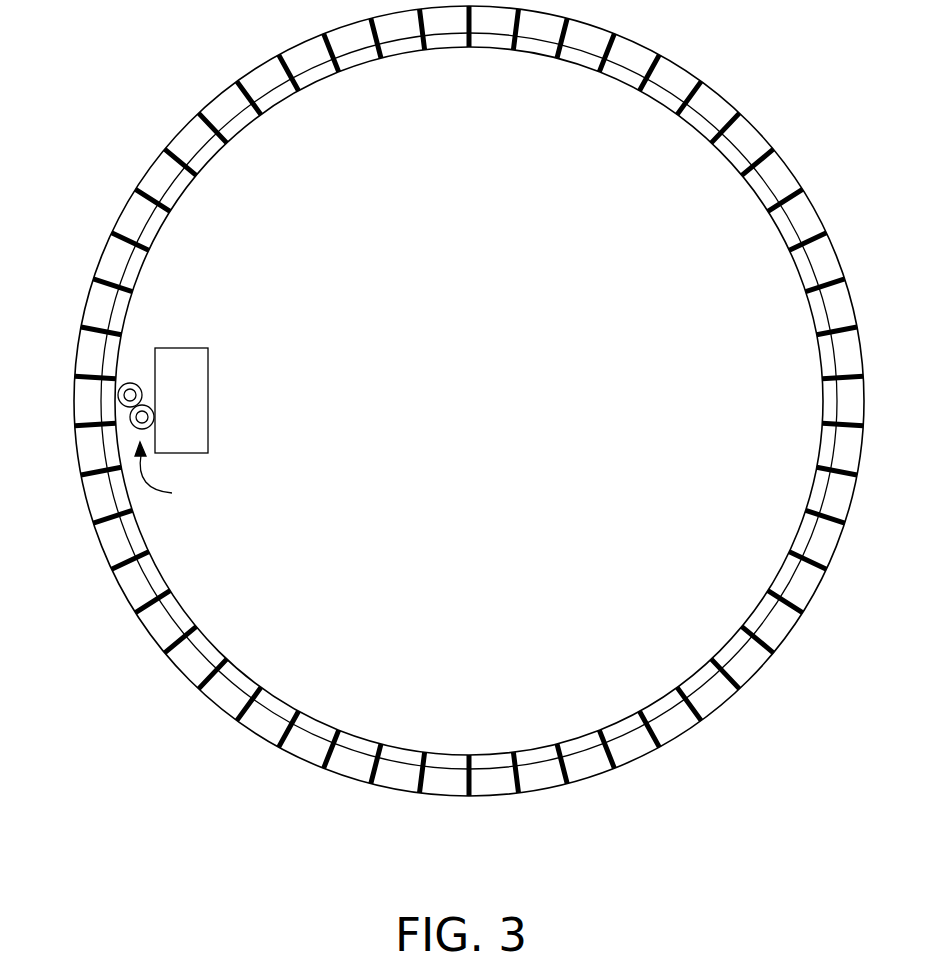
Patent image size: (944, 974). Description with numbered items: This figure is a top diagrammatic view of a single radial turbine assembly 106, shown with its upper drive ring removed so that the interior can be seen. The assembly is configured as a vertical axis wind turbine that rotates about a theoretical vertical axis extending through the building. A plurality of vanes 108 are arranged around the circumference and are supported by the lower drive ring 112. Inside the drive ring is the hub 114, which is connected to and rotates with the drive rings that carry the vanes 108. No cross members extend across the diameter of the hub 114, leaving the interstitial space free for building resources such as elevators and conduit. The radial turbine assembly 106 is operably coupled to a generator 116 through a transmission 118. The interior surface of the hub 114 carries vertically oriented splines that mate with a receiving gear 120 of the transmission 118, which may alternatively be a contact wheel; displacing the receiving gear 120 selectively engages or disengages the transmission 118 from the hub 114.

The radial turbine assembly 106 is at (453, 401).
The vanes 108 is at (610, 60).
The lower drive ring 112 is at (447, 28).
The hub 114 is at (312, 80).
The generator 116 is at (197, 383).
The transmission 118 is at (171, 473).
The receiving gear 120 is at (132, 378).